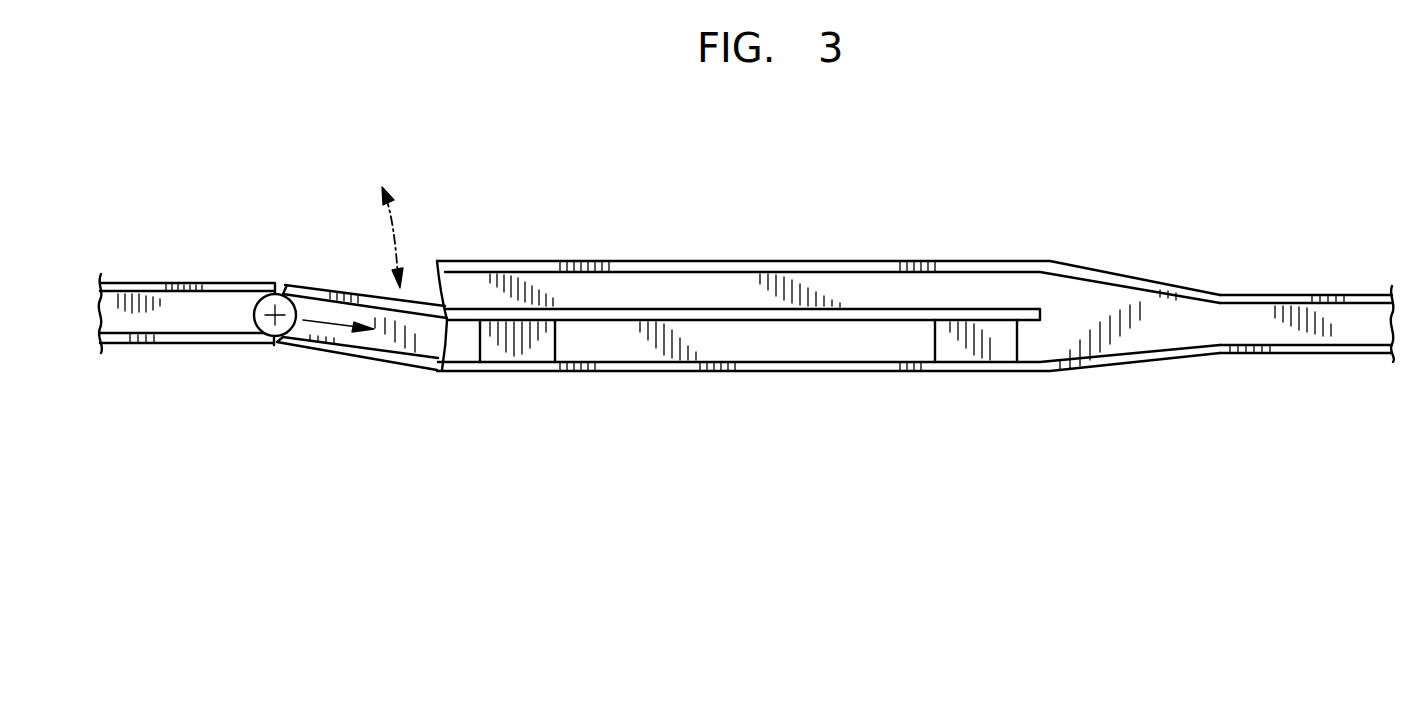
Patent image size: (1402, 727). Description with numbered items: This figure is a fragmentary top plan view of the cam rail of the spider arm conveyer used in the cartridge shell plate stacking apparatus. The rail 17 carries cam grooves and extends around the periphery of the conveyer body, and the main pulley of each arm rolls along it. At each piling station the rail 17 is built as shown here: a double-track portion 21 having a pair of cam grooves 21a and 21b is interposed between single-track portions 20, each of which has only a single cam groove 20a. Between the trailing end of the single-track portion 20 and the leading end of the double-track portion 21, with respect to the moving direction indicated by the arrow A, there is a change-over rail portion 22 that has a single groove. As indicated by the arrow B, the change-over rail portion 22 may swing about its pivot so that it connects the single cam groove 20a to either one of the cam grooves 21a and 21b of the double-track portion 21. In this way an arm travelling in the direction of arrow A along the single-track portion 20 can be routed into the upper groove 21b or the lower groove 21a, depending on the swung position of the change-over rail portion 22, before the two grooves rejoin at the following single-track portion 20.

The rail 17 is at (822, 218).
The single-track portion 20 is at (185, 284).
The single cam groove 20a is at (202, 320).
The double-track portion 21 is at (787, 372).
The cam groove 21a is at (663, 350).
The cam groove 21b is at (695, 290).
The change-over rail portion 22 is at (374, 362).
The arrow indicating moving direction A is at (330, 298).
The arrow indicating swing of change-over rail portion B is at (397, 225).